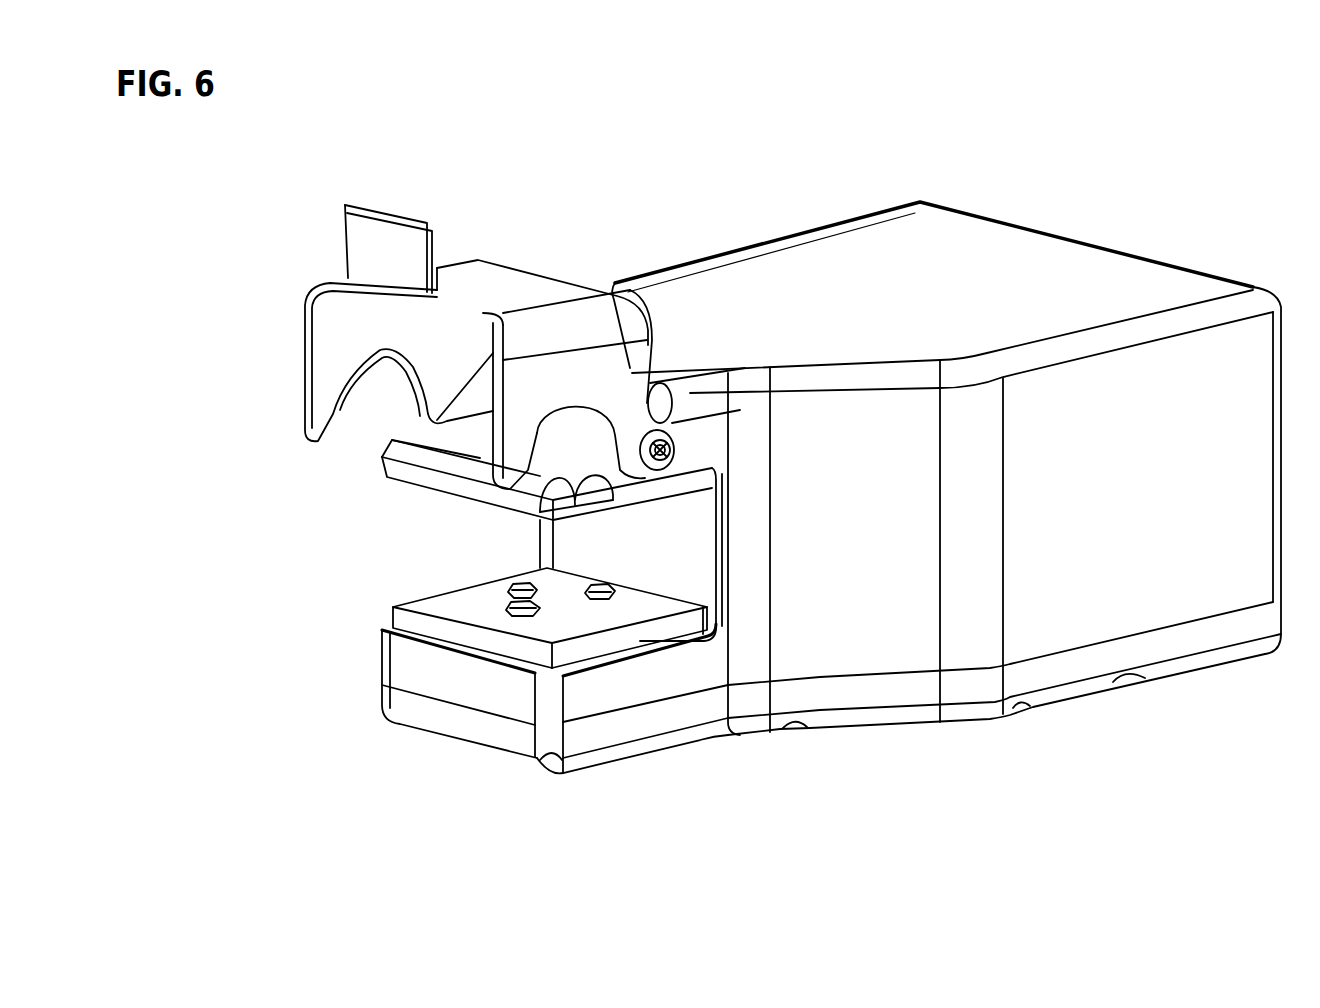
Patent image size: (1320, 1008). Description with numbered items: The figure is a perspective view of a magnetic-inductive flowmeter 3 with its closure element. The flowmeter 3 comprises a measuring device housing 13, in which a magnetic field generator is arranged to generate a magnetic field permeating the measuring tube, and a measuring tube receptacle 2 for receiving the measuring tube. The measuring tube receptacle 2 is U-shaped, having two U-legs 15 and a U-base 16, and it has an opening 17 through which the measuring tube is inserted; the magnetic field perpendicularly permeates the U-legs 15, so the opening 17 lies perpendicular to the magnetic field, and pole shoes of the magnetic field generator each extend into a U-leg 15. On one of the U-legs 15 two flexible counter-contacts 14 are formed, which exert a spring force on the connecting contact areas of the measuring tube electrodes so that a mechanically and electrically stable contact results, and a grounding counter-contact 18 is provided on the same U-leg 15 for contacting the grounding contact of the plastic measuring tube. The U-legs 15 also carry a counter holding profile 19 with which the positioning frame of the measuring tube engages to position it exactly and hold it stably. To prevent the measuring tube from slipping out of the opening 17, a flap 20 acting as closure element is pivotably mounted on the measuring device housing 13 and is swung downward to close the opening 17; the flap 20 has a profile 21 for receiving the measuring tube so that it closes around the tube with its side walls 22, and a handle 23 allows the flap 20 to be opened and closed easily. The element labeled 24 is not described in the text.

The measuring tube receptacle 2 is at (493, 775).
The magnetic-inductive flowmeter 3 is at (480, 205).
The measuring device housing 13 is at (1105, 277).
The counter-contacts 14 is at (543, 605).
The U-legs 15 is at (437, 458).
The U-base 16 is at (667, 550).
The opening 17 is at (452, 556).
The grounding counter-contact 18 is at (505, 583).
The counter holding profile 19 is at (600, 505).
The flap 20 is at (458, 278).
The profile 21 is at (568, 418).
The side walls 22 is at (325, 356).
The handle 23 is at (370, 245).
The bore 24 is at (672, 455).